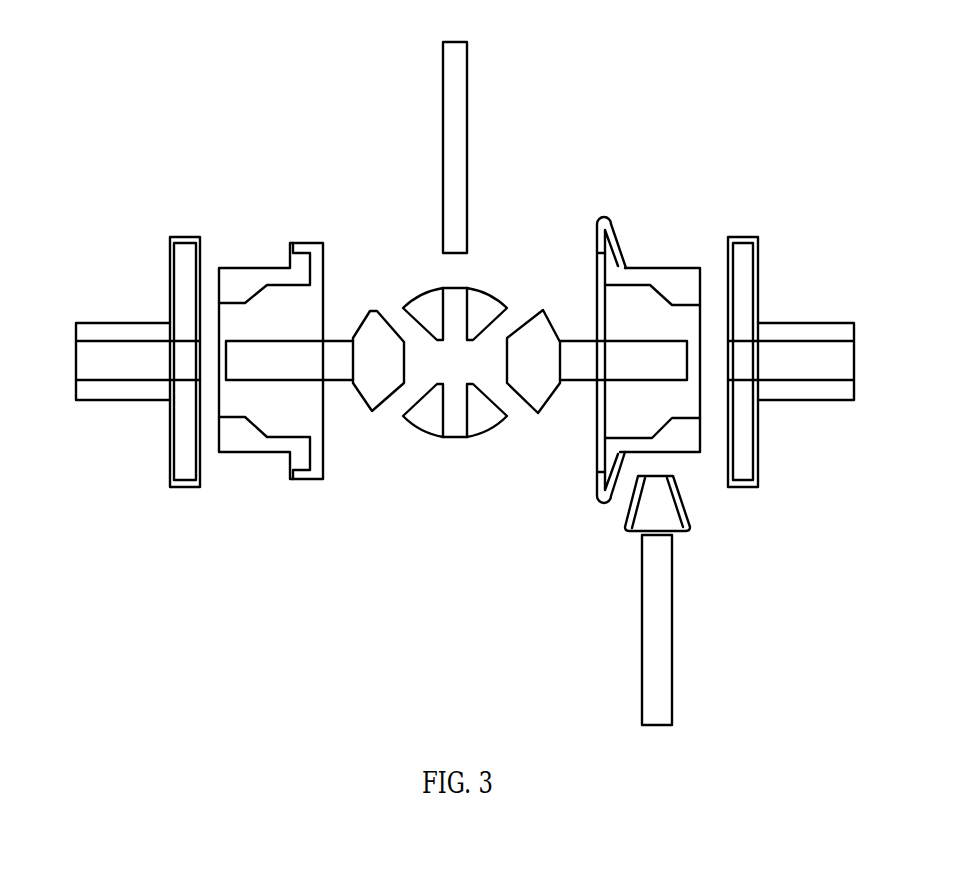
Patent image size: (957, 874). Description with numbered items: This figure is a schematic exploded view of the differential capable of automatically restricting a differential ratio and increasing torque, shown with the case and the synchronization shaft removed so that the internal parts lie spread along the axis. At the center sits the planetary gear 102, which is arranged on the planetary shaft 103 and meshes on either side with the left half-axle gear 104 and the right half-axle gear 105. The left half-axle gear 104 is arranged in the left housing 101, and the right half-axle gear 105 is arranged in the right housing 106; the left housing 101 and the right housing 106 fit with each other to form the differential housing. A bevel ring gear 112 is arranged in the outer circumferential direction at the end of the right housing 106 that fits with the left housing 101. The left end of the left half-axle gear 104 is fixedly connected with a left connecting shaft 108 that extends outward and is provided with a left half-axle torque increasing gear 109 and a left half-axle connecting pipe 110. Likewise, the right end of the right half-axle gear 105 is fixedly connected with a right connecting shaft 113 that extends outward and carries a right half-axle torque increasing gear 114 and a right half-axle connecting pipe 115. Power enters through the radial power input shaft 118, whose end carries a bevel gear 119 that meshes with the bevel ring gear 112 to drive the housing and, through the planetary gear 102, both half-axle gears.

The left housing 101 is at (273, 273).
The planetary gear 102 is at (490, 408).
The planetary shaft 103 is at (453, 202).
The left half-axle gear 104 is at (388, 362).
The right half-axle gear 105 is at (530, 345).
The right housing 106 is at (665, 280).
The left connecting shaft 108 is at (270, 363).
The left half-axle torque increasing gear 109 is at (188, 240).
The left half-axle connecting pipe 110 is at (118, 392).
The bevel ring gear 112 is at (617, 248).
The right connecting shaft 113 is at (642, 360).
The right half-axle torque increasing gear 114 is at (749, 292).
The right half-axle connecting pipe 115 is at (810, 390).
The radial power input shaft 118 is at (655, 620).
The bevel gear 119 is at (665, 507).